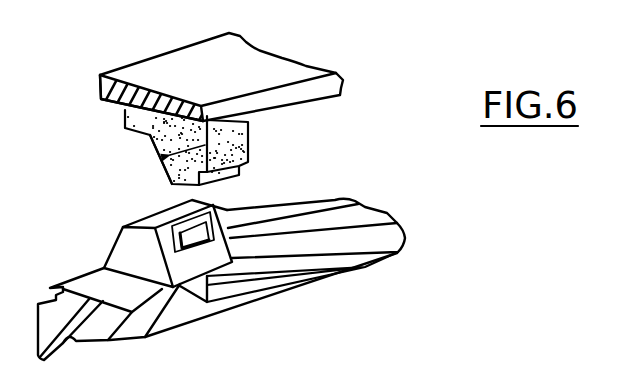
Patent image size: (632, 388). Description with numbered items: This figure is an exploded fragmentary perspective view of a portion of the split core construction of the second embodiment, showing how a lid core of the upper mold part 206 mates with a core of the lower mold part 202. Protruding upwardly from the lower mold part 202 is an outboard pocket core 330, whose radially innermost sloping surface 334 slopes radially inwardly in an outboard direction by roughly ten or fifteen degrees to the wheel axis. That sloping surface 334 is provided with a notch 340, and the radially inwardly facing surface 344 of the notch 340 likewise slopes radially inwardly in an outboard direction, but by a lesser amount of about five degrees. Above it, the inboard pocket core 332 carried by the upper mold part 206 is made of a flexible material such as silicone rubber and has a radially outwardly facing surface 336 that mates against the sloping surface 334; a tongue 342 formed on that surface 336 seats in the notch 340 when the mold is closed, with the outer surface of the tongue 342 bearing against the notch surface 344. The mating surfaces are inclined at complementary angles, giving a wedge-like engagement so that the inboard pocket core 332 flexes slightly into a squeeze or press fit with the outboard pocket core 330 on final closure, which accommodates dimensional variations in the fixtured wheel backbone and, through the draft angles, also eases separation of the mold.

The upper mold part 206 is at (268, 63).
The tongue 342 is at (172, 138).
The inboard pocket core 332 is at (146, 143).
The radially outwardly facing surface 336 is at (162, 160).
The outboard pocket core 330 is at (120, 230).
The notch 340 is at (199, 225).
The radially inwardly facing surface of notch 344 is at (305, 216).
The radially innermost sloping surface 334 is at (226, 254).
The lower mold part 202 is at (152, 337).